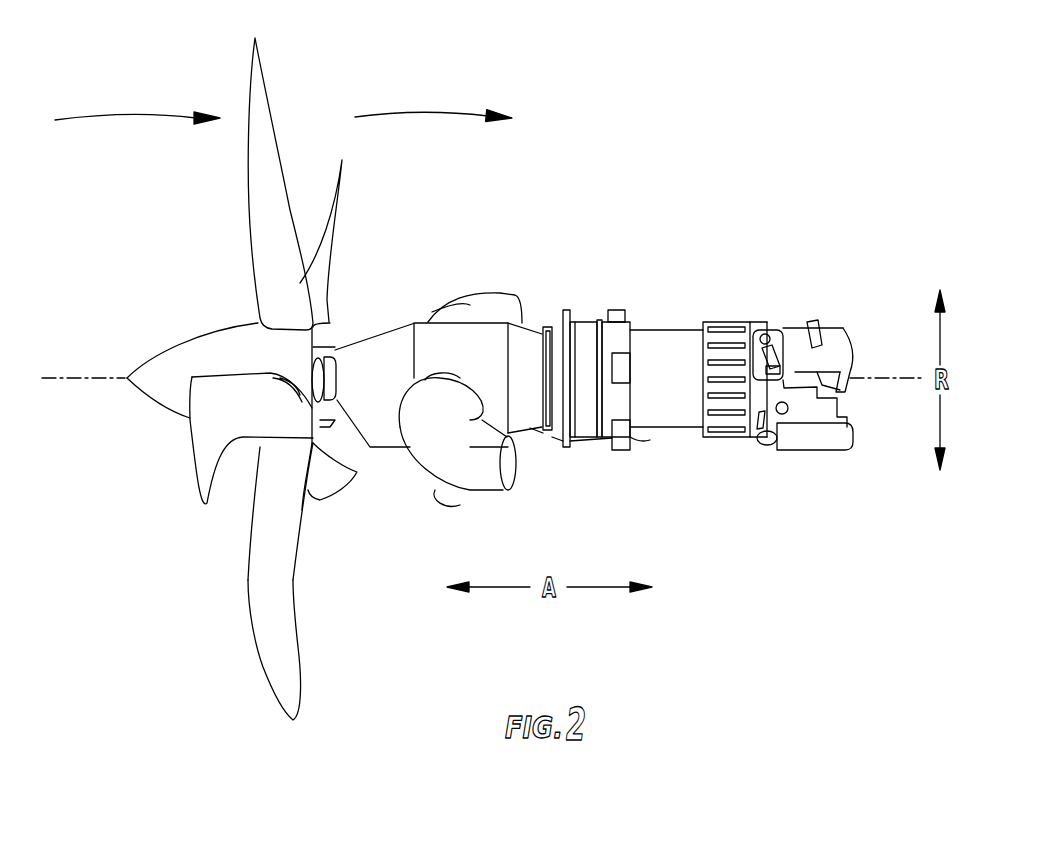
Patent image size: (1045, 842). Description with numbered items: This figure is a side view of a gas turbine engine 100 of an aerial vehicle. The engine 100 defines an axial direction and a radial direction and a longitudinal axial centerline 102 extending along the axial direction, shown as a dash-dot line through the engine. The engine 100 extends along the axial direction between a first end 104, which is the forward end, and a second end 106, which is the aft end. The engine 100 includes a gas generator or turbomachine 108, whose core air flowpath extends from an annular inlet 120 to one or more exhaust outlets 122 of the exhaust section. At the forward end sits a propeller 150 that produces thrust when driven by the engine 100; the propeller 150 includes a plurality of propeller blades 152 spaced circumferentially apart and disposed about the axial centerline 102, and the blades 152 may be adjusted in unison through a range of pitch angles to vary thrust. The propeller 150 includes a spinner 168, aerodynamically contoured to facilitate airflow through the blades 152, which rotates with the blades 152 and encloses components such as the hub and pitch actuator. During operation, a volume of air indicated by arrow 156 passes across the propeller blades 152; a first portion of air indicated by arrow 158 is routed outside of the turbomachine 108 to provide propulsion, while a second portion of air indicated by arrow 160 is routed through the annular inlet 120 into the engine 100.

The gas turbine engine 100 is at (480, 208).
The axial centerline 102 is at (98, 380).
The first end 104 is at (142, 493).
The second end 106 is at (830, 495).
The turbomachine 108 is at (645, 280).
The annular inlet 120 is at (688, 406).
The exhaust outlet 122 is at (468, 300).
The propeller 150 is at (323, 543).
The propeller blade 152 is at (258, 667).
The volume of air 156 is at (137, 113).
The first portion of air 158 is at (426, 113).
The second portion of air 160 is at (678, 263).
The spinner 168 is at (217, 328).